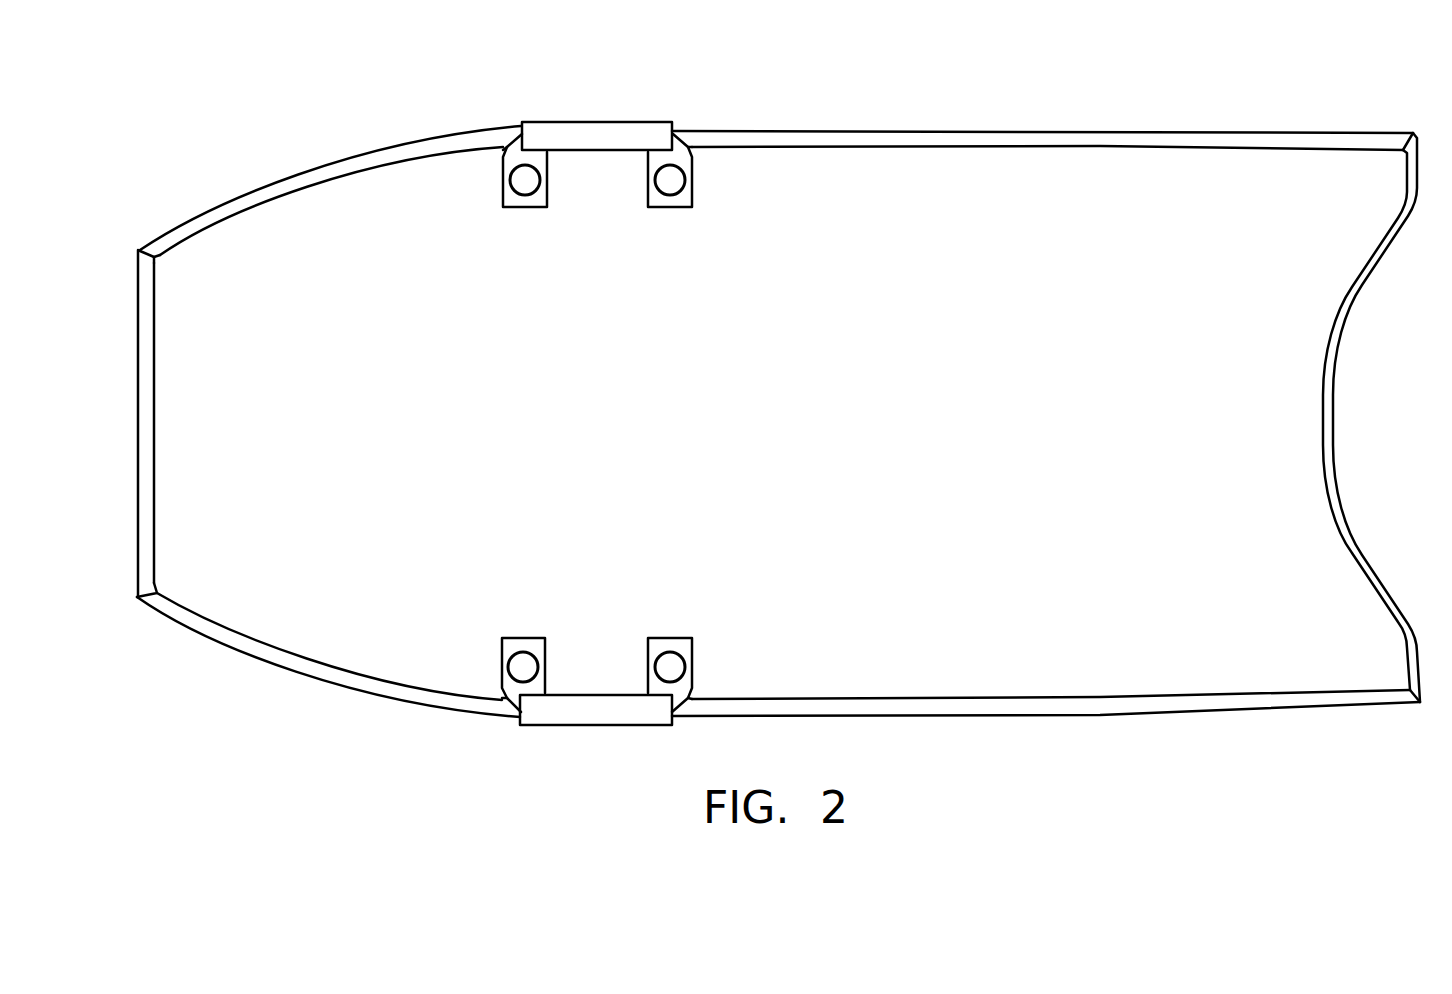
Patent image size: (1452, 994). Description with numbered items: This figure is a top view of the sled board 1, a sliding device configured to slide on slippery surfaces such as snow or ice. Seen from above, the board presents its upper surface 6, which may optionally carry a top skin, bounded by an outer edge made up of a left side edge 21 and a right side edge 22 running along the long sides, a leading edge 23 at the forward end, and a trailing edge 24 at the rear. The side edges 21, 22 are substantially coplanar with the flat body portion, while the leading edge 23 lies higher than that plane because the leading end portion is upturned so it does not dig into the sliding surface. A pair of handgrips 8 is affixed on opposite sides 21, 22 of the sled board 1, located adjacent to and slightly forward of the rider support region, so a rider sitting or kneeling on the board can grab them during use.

The sled board 1 is at (290, 117).
The upper surface 6 is at (1153, 242).
The handgrips 8 is at (577, 130).
The left side edge 21 is at (870, 130).
The right side edge 22 is at (1077, 717).
The leading edge 23 is at (133, 458).
The trailing edge 24 is at (1363, 284).